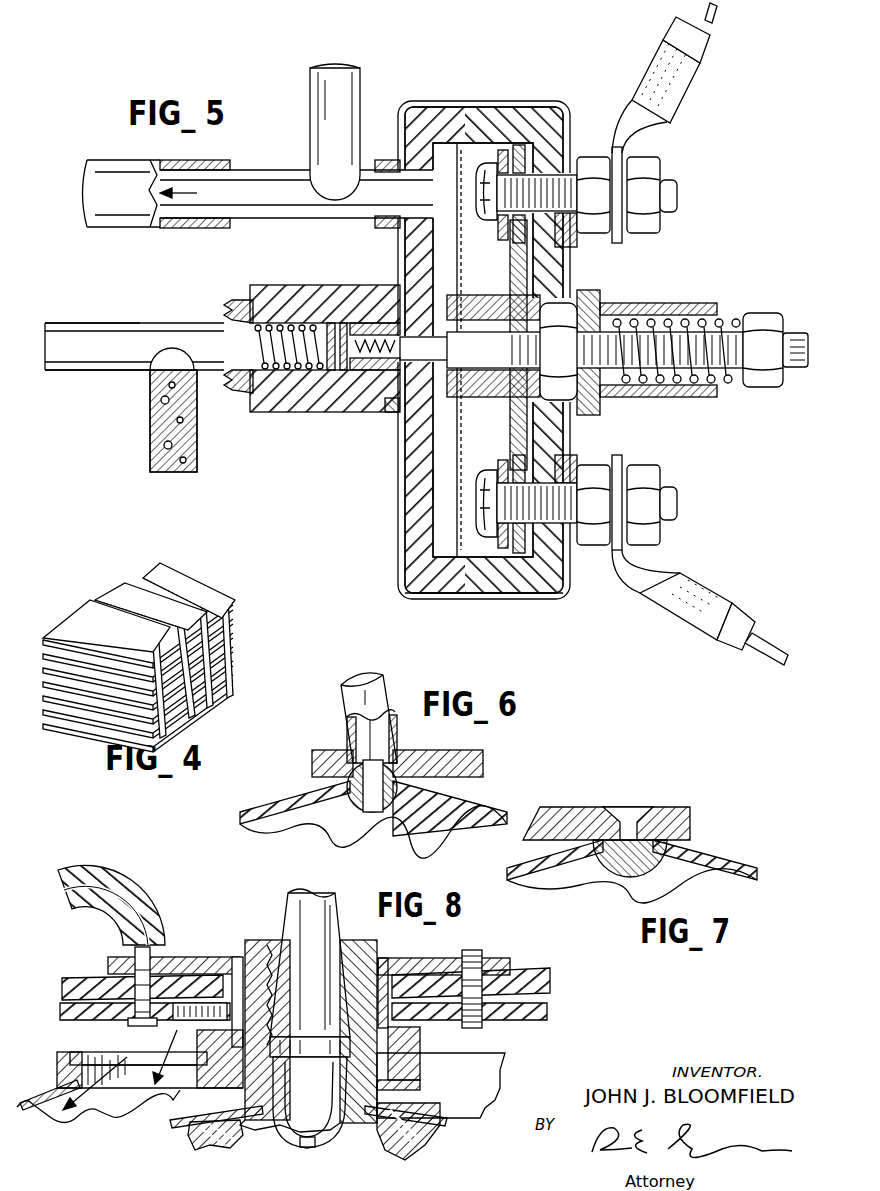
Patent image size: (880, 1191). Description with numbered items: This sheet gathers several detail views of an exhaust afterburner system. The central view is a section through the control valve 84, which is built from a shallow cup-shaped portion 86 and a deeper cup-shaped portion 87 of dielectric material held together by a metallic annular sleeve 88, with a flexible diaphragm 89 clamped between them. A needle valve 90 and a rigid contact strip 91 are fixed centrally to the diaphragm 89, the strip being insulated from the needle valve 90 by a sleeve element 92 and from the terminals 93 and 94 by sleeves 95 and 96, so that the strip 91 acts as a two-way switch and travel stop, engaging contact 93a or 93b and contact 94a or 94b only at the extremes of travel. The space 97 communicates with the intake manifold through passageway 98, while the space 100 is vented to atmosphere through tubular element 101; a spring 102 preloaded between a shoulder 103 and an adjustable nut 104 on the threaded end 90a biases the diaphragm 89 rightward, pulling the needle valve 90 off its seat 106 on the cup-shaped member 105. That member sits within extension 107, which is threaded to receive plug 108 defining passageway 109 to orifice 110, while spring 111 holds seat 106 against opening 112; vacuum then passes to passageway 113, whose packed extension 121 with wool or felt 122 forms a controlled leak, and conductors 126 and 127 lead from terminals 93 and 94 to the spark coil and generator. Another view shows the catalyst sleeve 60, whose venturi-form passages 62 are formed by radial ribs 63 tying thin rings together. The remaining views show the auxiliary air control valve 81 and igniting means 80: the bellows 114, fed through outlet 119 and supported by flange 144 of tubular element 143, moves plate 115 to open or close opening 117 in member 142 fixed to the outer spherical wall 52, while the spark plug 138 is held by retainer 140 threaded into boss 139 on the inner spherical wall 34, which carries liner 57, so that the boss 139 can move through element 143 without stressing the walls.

In FIG. 5, the control valve 84 is at (492, 95).
In FIG. 5, the shallow cup-shaped portion 86 is at (424, 100).
In FIG. 5, the deeper cup-shaped portion 87 is at (545, 101).
In FIG. 5, the annular sleeve 88 is at (548, 600).
In FIG. 5, the diaphragm 89 is at (460, 290).
In FIG. 5, the needle valve 90 is at (395, 408).
In FIG. 5, the threaded end 90a is at (790, 370).
In FIG. 5, the contact strip 91 is at (510, 410).
In FIG. 5, the sleeve element 92 is at (488, 392).
In FIG. 5, the terminal 93 is at (482, 182).
In FIG. 5, the contact 93a is at (500, 220).
In FIG. 5, the contact 93b is at (570, 240).
In FIG. 5, the terminal 94 is at (480, 490).
In FIG. 5, the contact 94a is at (503, 552).
In FIG. 5, the contact 94b is at (550, 460).
In FIG. 5, the sleeve 95 is at (513, 232).
In FIG. 5, the sleeve 96 is at (519, 560).
In FIG. 5, the space 97 is at (432, 484).
In FIG. 5, the passageway 98 is at (380, 212).
In FIG. 5, the space 100 is at (490, 445).
In FIG. 5, the tubular element 101 is at (672, 397).
In FIG. 5, the spring 102 is at (710, 303).
In FIG. 5, the shoulder 103 is at (602, 395).
In FIG. 5, the adjustable nut 104 is at (757, 390).
In FIG. 5, the cup-shaped member 105 is at (336, 300).
In FIG. 5, the seat 106 is at (388, 300).
In FIG. 5, the extension 107 is at (282, 285).
In FIG. 5, the plug 108 is at (228, 300).
In FIG. 5, the passageway 109 is at (285, 412).
In FIG. 5, the orifice 110 is at (236, 343).
In FIG. 5, the spring 111 is at (238, 393).
In FIG. 5, the opening 112 is at (393, 413).
In FIG. 5, the passageway 113 is at (143, 330).
In FIG. 5, the extension 121 is at (150, 455).
In FIG. 5, the packing 122 is at (162, 415).
In FIG. 5, the electrical conductor 126 is at (708, 30).
In FIG. 5, the electrical conductor 127 is at (763, 648).
In FIG. 4, the sleeve 60 is at (252, 605).
In FIG. 4, the venturi-form passages 62 is at (225, 672).
In FIG. 4, the radial ribs 63 is at (85, 612).
In FIG. 6, the outlet 119 is at (390, 700).
In FIG. 8, the outlet 119 is at (145, 905).
In FIG. 6, the flange 144 is at (318, 760).
In FIG. 7, the flange 144 is at (670, 806).
In FIG. 8, the flange 144 is at (182, 955).
In FIG. 6, the bellows 114 is at (480, 795).
In FIG. 7, the bellows 114 is at (715, 855).
In FIG. 8, the bellows 114 is at (78, 978).
In FIG. 8, the igniting means 80 is at (362, 870).
In FIG. 8, the auxiliary air control valve 81 is at (545, 975).
In FIG. 8, the spark plug 138 is at (300, 920).
In FIG. 8, the spark plug retainer 140 is at (250, 942).
In FIG. 8, the tubular element 143 is at (468, 1075).
In FIG. 8, the plate 115 is at (550, 1000).
In FIG. 8, the spherical wall 34 is at (177, 1120).
In FIG. 8, the liner 57 is at (202, 1136).
In FIG. 8, the boss 139 is at (257, 1095).
In FIG. 8, the opening 117 is at (70, 1053).
In FIG. 8, the outer spherical wall 52 is at (52, 1093).
In FIG. 8, the member 142 is at (60, 1107).